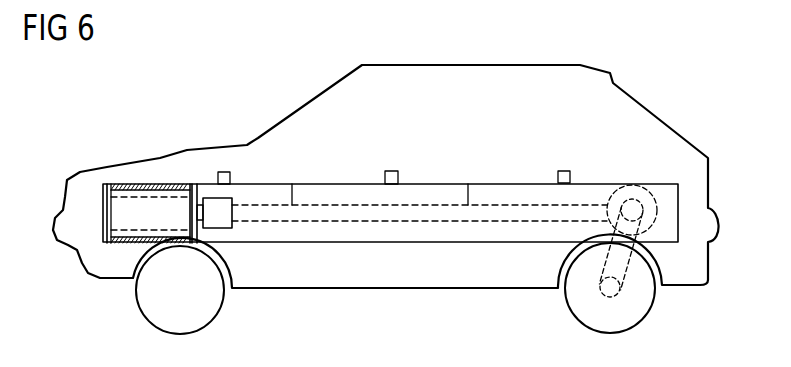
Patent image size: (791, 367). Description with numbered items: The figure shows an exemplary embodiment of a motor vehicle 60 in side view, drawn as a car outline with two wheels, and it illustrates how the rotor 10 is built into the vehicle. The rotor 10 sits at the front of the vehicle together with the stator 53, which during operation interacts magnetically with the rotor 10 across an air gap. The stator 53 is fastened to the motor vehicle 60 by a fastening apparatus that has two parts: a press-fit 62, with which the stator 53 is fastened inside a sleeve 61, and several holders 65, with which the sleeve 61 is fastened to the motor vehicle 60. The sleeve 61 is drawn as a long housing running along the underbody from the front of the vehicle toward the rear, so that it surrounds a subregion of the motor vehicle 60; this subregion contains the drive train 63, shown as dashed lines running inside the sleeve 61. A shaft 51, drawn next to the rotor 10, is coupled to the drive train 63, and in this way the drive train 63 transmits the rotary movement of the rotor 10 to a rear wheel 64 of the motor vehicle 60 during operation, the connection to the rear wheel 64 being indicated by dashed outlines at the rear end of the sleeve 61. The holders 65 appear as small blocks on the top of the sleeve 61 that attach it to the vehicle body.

The rotor 10 is at (145, 208).
The shaft 51 is at (202, 212).
The stator 53 is at (128, 190).
The motor vehicle 60 is at (462, 65).
The sleeve 61 is at (437, 183).
The press-fit 62 is at (168, 191).
The drive train 63 is at (353, 210).
The rear wheel 64 is at (640, 303).
The holders 65 is at (230, 174).